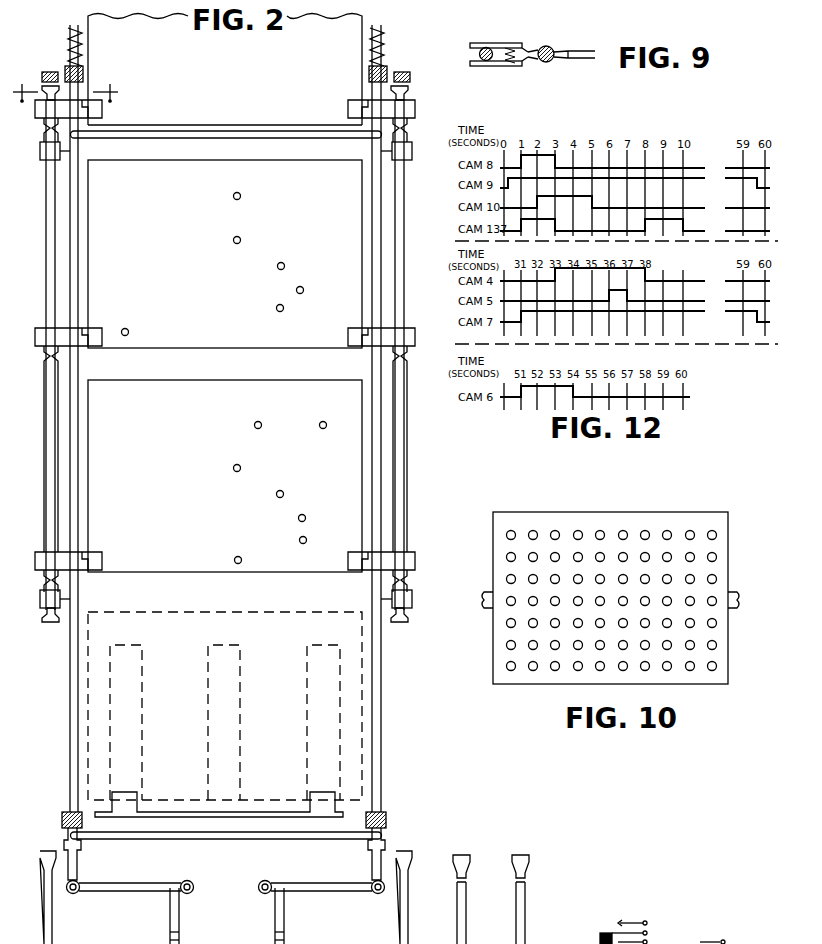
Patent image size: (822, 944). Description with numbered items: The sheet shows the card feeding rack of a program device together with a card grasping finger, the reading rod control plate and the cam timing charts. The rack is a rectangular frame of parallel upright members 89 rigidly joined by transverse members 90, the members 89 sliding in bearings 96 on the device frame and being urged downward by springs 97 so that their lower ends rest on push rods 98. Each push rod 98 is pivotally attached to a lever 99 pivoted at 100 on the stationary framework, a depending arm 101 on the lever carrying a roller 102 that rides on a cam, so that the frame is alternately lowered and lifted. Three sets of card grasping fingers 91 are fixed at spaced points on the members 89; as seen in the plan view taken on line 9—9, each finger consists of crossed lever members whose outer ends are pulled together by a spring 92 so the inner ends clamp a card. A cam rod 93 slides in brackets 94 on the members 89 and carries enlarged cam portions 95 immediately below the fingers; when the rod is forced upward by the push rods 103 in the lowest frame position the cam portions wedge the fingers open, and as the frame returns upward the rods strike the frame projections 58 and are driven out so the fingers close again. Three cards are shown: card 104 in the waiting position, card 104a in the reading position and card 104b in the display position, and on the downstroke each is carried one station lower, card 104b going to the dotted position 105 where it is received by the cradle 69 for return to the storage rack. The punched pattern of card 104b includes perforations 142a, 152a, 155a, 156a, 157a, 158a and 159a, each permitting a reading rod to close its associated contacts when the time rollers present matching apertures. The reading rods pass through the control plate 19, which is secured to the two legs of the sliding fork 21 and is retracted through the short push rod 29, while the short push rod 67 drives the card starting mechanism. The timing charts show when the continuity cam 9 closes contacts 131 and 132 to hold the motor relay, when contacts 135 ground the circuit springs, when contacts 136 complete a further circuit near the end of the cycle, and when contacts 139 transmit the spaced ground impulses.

In FIG. 2, the continuity cam 9 is at (65, 85).
In FIG. 10, the reading rod control plate 19 is at (659, 520).
In FIG. 10, the U-shaped bracket or fork 21 is at (487, 608).
In FIG. 2, the short push rod 29 is at (525, 903).
In FIG. 2, the frame projections 58 is at (44, 74).
In FIG. 2, the short push rod 67 is at (466, 902).
In FIG. 2, the cradle 69 is at (243, 816).
In FIG. 2, the upright members 89 is at (70, 660).
In FIG. 2, the transverse members 90 is at (186, 138).
In FIG. 2, the card grasping fingers 91 is at (412, 114).
In FIG. 9, the card grasping fingers 91 is at (535, 47).
In FIG. 9, the spring 92 is at (506, 47).
In FIG. 2, the cam rod 93 is at (46, 452).
In FIG. 9, the cam rod 93 is at (486, 61).
In FIG. 2, the brackets 94 is at (40, 152).
In FIG. 2, the enlarged cam portions 95 is at (44, 352).
In FIG. 9, the enlarged cam portions 95 is at (472, 60).
In FIG. 2, the bearings 96 is at (67, 70).
In FIG. 2, the springs 97 is at (70, 38).
In FIG. 2, the push rods 98 is at (78, 872).
In FIG. 2, the lever 99 is at (142, 887).
In FIG. 2, the pivot 100 is at (259, 890).
In FIG. 2, the depending arm 101 is at (170, 905).
In FIG. 2, the roller 102 is at (182, 943).
In FIG. 2, the push rods 103 is at (44, 886).
In FIG. 2, the pattern card 104 is at (312, 119).
In FIG. 2, the pattern card 104a is at (290, 342).
In FIG. 2, the pattern card 104b is at (282, 571).
In FIG. 2, the dotted-line position 105 is at (350, 794).
In FIG. 2, the contacts 131 is at (611, 917).
In FIG. 2, the contact 132 is at (609, 937).
In FIG. 2, the contacts 135 is at (696, 938).
In FIG. 2, the contacts 136 is at (340, 943).
In FIG. 2, the contacts 139 is at (104, 943).
In FIG. 2, the perforation 142a is at (326, 428).
In FIG. 2, the perforation 152a is at (262, 427).
In FIG. 2, the perforation 155a is at (240, 237).
In FIG. 2, the perforation 156a is at (284, 263).
In FIG. 2, the perforation 157a is at (303, 287).
In FIG. 2, the perforation 158a is at (306, 538).
In FIG. 2, the perforation 159a is at (241, 558).